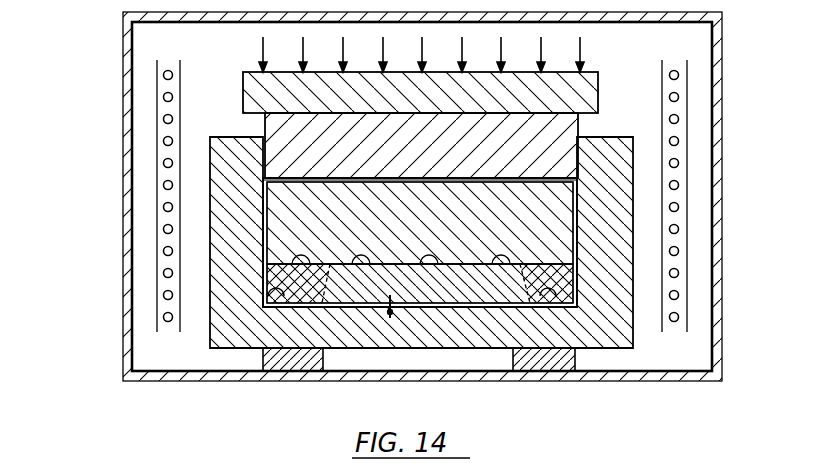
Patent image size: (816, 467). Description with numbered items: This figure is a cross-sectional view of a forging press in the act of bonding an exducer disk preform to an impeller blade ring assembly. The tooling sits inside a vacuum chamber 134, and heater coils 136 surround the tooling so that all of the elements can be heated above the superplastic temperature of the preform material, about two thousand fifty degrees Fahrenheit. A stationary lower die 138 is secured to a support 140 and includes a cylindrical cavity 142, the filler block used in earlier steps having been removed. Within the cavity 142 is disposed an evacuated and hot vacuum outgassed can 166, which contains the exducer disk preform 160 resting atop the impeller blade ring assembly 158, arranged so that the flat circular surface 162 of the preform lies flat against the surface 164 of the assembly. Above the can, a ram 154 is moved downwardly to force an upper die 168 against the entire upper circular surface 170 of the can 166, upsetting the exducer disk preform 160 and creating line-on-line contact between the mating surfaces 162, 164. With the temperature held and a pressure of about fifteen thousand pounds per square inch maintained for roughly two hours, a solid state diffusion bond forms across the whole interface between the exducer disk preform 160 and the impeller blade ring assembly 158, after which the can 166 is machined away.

The vacuum chamber 134 is at (148, 33).
The heater coils 136 is at (167, 68).
The stationary lower die 138 is at (217, 178).
The support 140 is at (292, 362).
The cylindrical cavity 142 is at (280, 306).
The ram 154 is at (418, 104).
The impeller blade ring assembly 158 is at (392, 318).
The exducer disk preform 160 is at (354, 221).
The flat circular surface 162 is at (368, 262).
The surface 164 is at (430, 262).
The can 166 is at (478, 177).
The upper die 168 is at (355, 147).
The upper circular surface 170 is at (421, 177).